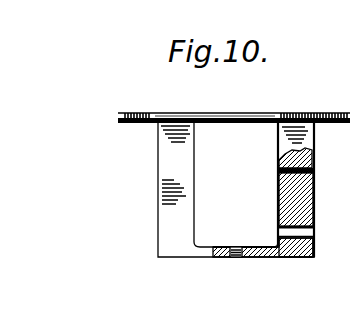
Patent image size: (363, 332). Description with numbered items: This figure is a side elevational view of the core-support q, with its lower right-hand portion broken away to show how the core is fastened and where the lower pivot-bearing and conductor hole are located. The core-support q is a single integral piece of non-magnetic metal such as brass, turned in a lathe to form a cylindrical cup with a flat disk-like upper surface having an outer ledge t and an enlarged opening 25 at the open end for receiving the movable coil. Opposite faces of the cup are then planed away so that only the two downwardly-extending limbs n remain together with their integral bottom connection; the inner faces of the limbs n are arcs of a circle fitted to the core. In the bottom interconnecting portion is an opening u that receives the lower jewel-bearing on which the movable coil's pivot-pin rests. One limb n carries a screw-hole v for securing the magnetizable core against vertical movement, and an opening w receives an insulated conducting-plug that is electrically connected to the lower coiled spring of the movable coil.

The outer ledge t is at (124, 118).
The core-support q is at (322, 114).
The limbs n is at (166, 173).
The enlarged opening 25 is at (276, 125).
The screw-hole v is at (300, 171).
The opening w is at (311, 233).
The opening u is at (234, 258).